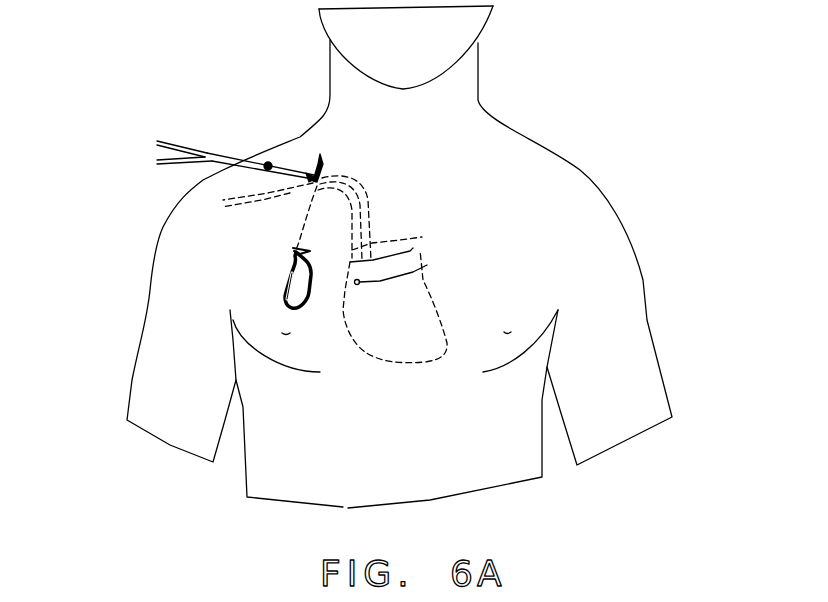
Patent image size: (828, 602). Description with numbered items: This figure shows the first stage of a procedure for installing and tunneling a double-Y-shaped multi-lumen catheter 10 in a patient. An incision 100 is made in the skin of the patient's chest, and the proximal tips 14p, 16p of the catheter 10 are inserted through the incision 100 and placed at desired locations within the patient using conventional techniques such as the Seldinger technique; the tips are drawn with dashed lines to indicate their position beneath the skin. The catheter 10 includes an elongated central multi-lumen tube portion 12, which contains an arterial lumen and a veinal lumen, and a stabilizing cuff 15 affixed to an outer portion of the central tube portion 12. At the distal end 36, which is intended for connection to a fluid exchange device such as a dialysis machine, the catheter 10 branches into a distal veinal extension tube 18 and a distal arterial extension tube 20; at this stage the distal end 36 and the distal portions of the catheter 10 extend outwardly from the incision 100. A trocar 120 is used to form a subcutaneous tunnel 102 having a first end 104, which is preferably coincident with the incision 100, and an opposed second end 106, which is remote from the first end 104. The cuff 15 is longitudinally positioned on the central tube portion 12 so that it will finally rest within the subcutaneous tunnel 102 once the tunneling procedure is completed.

The multi-lumen catheter 10 is at (235, 140).
The central multi-lumen tube portion 12 is at (283, 165).
The stabilizing cuff 15 is at (284, 165).
The distal veinal extension tube 18 is at (157, 140).
The distal arterial extension tube 20 is at (157, 164).
The distal end 36 is at (135, 152).
The incision 100 is at (328, 180).
The subcutaneous tunnel 102 is at (300, 217).
The first end 104 is at (324, 180).
The second end 106 is at (293, 248).
The trocar 120 is at (287, 280).
The proximal tip of proximal veinal extension tube 14p is at (427, 265).
The proximal tip of proximal arterial extension tube 16p is at (413, 248).